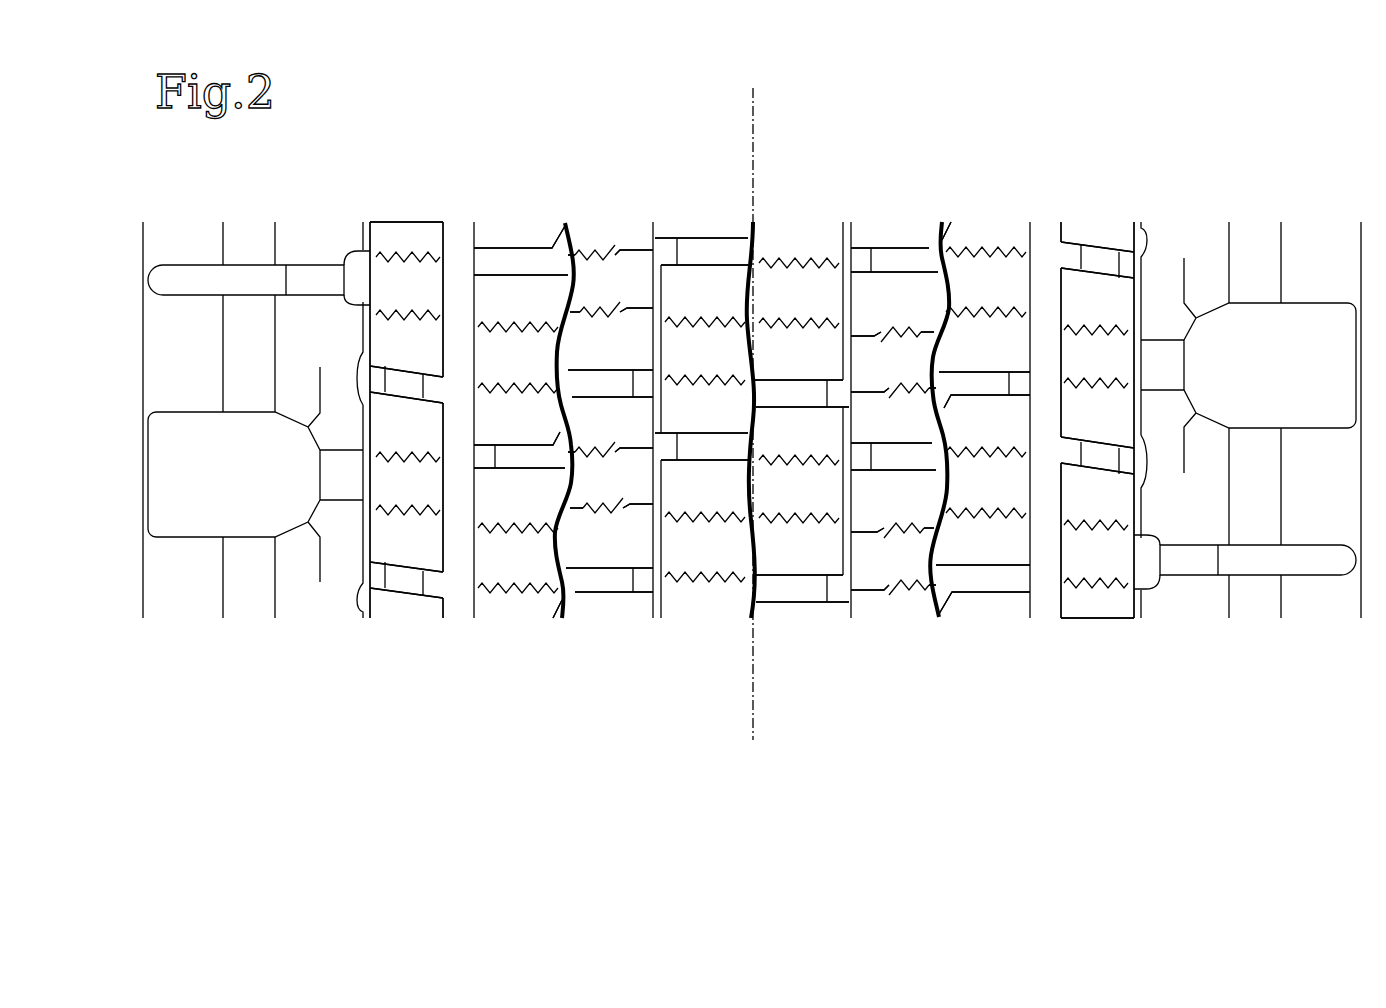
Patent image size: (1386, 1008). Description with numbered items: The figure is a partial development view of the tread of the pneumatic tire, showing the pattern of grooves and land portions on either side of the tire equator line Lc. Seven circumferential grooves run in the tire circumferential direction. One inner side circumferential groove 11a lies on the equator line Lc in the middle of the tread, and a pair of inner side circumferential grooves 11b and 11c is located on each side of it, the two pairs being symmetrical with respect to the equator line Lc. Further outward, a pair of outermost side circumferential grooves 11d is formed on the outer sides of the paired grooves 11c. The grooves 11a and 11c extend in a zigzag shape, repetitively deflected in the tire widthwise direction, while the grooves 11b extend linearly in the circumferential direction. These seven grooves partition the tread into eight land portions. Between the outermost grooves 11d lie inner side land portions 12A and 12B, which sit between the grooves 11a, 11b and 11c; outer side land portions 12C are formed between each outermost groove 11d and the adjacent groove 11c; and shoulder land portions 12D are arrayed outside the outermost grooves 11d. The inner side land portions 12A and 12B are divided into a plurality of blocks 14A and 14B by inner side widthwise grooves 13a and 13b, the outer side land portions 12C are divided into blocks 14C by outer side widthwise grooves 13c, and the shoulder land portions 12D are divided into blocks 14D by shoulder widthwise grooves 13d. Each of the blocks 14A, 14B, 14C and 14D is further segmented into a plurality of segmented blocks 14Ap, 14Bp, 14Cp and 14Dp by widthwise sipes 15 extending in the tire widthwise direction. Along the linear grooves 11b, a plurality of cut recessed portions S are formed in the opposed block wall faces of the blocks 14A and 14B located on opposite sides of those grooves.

The inner side circumferential groove 11a is at (752, 226).
The inner side circumferential groove 11b is at (655, 222).
The inner side circumferential groove 11c is at (565, 222).
The outermost side circumferential groove 11d is at (457, 240).
The inner side land portion 12A is at (752, 430).
The inner side land portion 12B is at (746, 430).
The outer side land portion 12C is at (749, 430).
The shoulder land portion 12D is at (744, 430).
The inner side widthwise groove 13a is at (730, 560).
The inner side widthwise groove 13b is at (633, 565).
The outer side widthwise groove 13c is at (546, 598).
The shoulder widthwise groove 13d is at (406, 586).
The segmented block 14Ap is at (722, 464).
The segmented block 14Bp is at (583, 553).
The segmented block 14Cp is at (530, 452).
The segmented block 14Dp is at (390, 489).
The block 14A is at (752, 498).
The block 14B is at (746, 503).
The block 14C is at (749, 490).
The block 14D is at (744, 490).
The widthwise sipe 15 is at (387, 313).
The cut recessed portion S is at (702, 299).
The tire equator line Lc is at (751, 399).